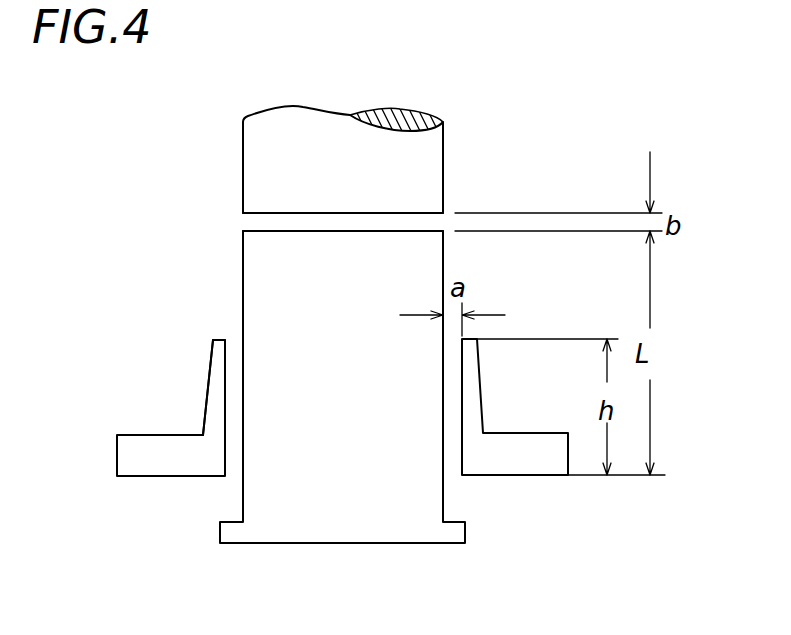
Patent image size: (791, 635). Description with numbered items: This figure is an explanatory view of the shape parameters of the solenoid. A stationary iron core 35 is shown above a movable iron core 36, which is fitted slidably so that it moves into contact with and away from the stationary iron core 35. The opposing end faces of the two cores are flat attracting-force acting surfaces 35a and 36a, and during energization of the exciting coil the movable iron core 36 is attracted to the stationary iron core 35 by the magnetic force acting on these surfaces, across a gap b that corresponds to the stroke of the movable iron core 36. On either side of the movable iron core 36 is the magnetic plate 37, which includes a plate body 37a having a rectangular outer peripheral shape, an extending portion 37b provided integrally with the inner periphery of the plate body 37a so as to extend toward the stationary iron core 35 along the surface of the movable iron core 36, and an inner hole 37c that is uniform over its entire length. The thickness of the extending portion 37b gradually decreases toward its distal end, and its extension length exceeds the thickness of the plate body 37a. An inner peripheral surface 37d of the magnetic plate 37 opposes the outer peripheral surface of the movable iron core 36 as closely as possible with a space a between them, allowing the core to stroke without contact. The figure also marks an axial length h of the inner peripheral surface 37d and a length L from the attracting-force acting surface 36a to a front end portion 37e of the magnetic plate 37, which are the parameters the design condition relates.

The stationary iron core 35 is at (258, 141).
The attracting-force acting surface 35a is at (268, 218).
The movable iron core 36 is at (363, 507).
The attracting-force acting surface 36a is at (332, 229).
The magnetic plate 37 is at (127, 417).
The plate body 37a is at (148, 467).
The extending portion 37b is at (213, 390).
The inner hole 37c is at (237, 413).
The inner peripheral surface 37d is at (224, 378).
The front end portion 37e is at (461, 476).